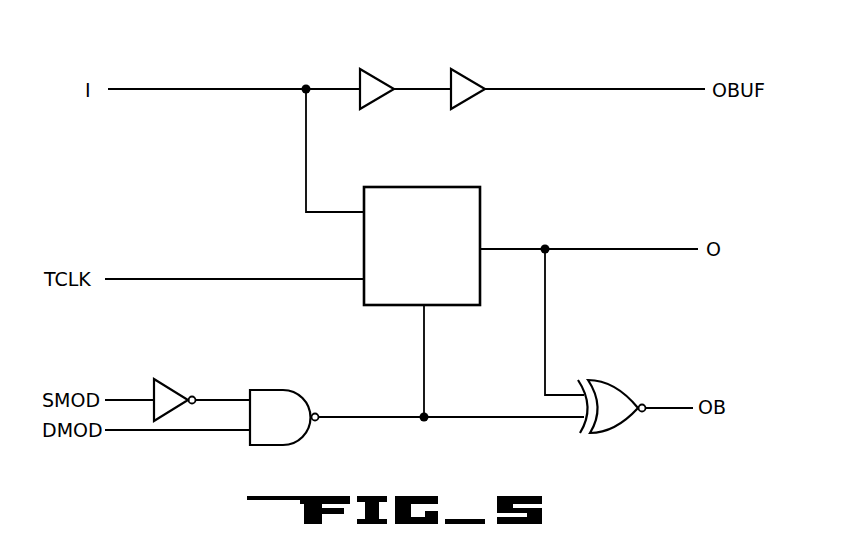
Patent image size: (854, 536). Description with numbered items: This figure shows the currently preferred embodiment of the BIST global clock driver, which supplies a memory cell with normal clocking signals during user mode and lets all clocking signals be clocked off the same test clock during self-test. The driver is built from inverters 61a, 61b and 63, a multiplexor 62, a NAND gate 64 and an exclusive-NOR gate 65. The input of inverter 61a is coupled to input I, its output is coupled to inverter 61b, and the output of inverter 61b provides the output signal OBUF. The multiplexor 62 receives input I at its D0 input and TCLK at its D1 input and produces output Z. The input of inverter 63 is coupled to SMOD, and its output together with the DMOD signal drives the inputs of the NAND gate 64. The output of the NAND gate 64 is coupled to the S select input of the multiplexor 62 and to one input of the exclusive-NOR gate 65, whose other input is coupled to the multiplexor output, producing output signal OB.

The inverter 61a is at (378, 71).
The inverter 61b is at (468, 71).
The multiplexor (MUX) 62 is at (474, 297).
The inverter 63 is at (174, 387).
The NAND gate 64 is at (289, 427).
The exclusive-NOR gate 65 is at (622, 417).